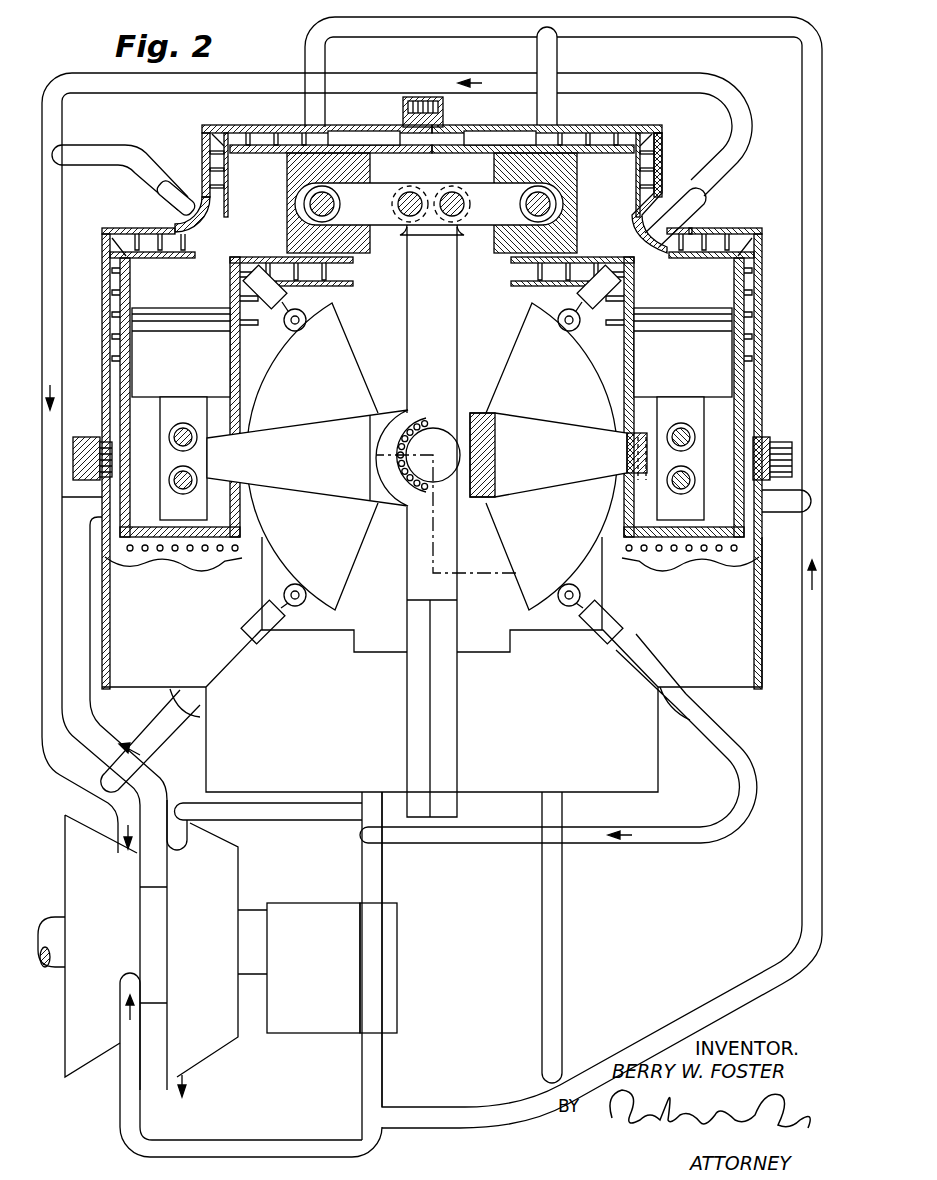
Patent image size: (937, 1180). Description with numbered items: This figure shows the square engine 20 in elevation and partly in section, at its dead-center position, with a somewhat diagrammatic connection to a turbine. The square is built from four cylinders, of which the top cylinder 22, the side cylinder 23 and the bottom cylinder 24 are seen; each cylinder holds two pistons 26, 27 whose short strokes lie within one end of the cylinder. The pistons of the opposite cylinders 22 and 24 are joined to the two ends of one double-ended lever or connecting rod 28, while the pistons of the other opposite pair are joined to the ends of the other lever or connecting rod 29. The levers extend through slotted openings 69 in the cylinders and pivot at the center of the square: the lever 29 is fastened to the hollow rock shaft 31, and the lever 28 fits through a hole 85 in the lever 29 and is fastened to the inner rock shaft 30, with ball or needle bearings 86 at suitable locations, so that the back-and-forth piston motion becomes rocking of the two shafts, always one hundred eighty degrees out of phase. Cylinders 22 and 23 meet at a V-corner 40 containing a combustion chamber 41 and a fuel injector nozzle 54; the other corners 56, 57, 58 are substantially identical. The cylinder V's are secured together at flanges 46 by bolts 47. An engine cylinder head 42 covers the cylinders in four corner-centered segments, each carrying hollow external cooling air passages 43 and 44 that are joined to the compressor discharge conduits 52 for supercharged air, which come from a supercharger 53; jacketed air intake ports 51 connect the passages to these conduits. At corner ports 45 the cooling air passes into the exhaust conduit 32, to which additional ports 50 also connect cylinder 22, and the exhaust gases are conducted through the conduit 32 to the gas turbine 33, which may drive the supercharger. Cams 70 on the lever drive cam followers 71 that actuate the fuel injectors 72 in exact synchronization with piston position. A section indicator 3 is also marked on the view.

The square 20 is at (678, 143).
The engine cylinder 22 is at (478, 150).
The engine cylinder 23 is at (755, 338).
The engine cylinder 24 is at (548, 777).
The piston 26 is at (718, 356).
The piston 27 is at (178, 356).
The lever or connecting rod 28 is at (444, 314).
The lever or connecting rod 29 is at (572, 446).
The rock shaft 30 is at (445, 452).
The hollow rock shaft 31 is at (410, 402).
The exhaust conduit 32 is at (232, 78).
The gas turbine 33 is at (112, 901).
The section line 3- 3 is at (432, 493).
The V-corner 40 is at (632, 252).
The combustion chamber 41 is at (646, 217).
The engine cylinder head 42 is at (682, 190).
The hollow external cooling air passage 43 is at (276, 133).
The hollow external cooling air passage 44 is at (766, 262).
The port 45 is at (170, 212).
The flange 46 is at (432, 96).
The bolt 47 is at (448, 110).
The additional port 50 is at (340, 140).
The air intake port 51 is at (232, 357).
The conduit for supercharged air 52 is at (105, 730).
The supercharger 53 is at (225, 899).
The fuel injector nozzle 54 is at (645, 243).
The corner 56 is at (610, 634).
The corner 57 is at (234, 657).
The corner 58 is at (210, 240).
The slotted opening 69 is at (353, 270).
The cam 70 is at (332, 384).
The cam follower 71 is at (303, 323).
The fuel injector 72 is at (585, 645).
The hole 85 is at (478, 406).
The ball or needle bearings 86 is at (396, 446).